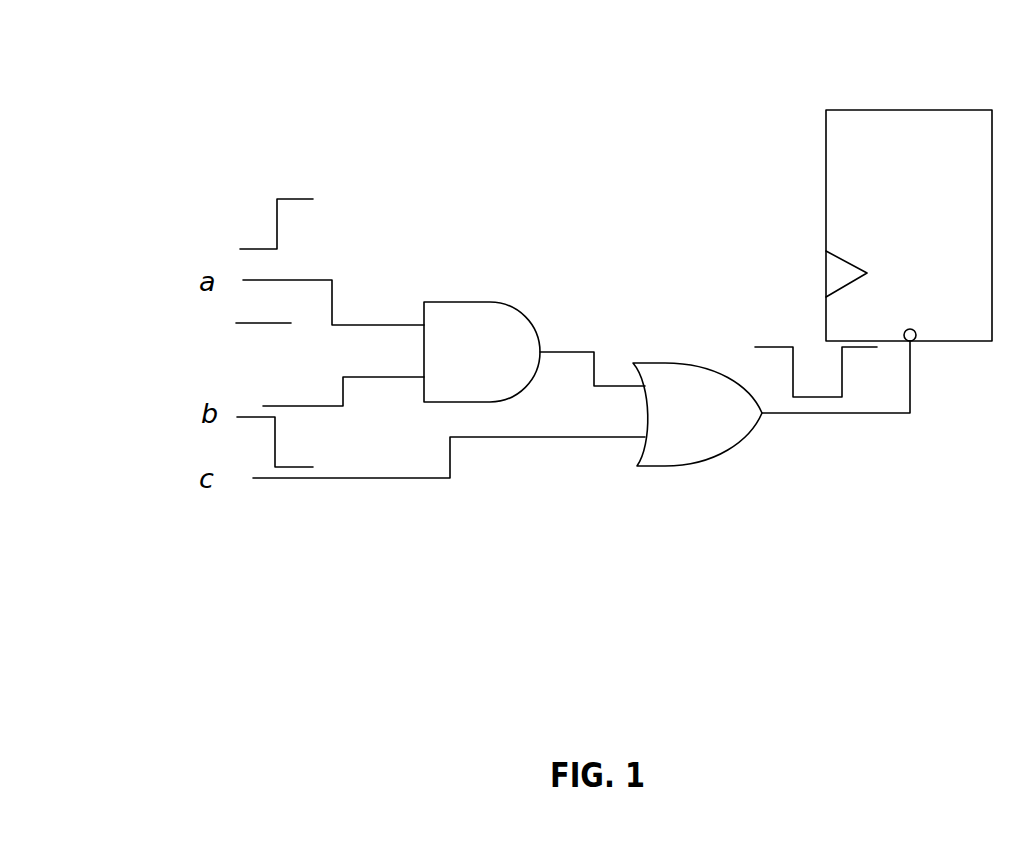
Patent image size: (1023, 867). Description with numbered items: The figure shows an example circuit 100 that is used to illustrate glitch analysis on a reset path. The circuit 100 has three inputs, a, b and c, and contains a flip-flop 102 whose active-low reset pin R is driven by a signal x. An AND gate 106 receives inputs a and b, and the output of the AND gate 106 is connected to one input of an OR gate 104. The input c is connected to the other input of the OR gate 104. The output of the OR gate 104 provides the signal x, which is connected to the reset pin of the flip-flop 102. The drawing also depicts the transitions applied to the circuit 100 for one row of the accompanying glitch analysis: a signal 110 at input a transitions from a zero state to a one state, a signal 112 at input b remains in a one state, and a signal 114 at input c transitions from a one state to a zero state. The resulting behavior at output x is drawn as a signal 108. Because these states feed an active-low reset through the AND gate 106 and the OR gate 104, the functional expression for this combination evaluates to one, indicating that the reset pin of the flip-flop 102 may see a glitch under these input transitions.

The circuit 100 is at (150, 124).
The flip-flop 102 is at (925, 110).
The OR gate 104 is at (668, 362).
The AND gate 106 is at (495, 302).
The signal at output x 108 is at (828, 398).
The signal at input a 110 is at (290, 199).
The signal at input b 112 is at (244, 322).
The signal at input c 114 is at (272, 437).
The signal x is at (800, 422).